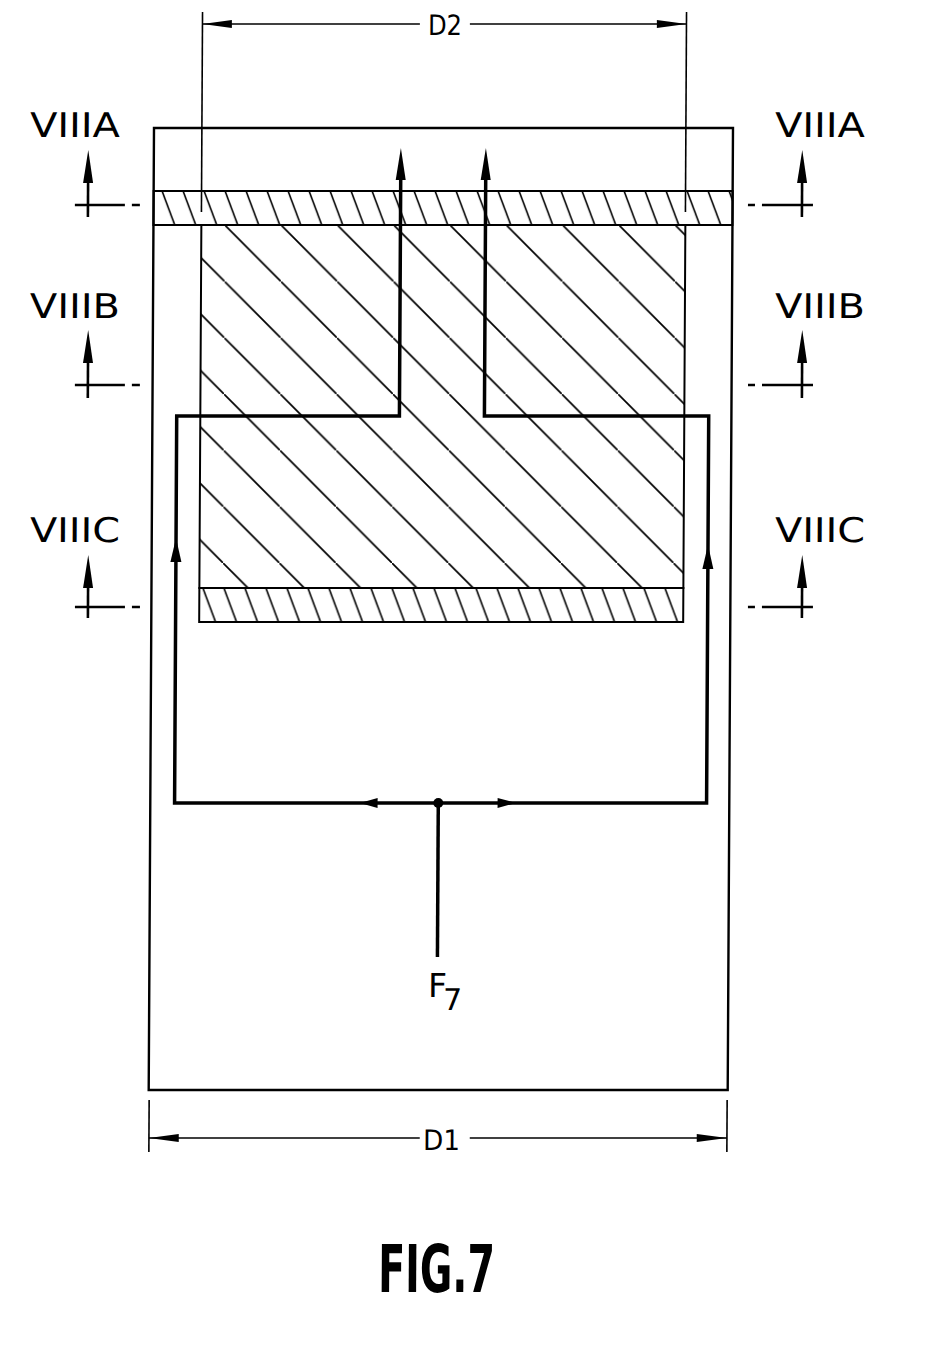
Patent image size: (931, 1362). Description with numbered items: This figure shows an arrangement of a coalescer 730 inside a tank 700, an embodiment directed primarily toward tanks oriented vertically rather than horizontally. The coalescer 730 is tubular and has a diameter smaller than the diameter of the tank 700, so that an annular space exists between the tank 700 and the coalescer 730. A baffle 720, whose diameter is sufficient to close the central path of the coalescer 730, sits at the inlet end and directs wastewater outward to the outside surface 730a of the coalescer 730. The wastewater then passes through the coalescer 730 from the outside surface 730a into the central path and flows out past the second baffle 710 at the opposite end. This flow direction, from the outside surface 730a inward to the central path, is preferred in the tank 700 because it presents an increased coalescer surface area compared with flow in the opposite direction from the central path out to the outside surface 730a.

The tank 700 is at (339, 128).
The baffle 710 is at (561, 205).
The baffle 720 is at (526, 605).
The coalescer 730 is at (213, 567).
The outside surface 730a is at (658, 478).